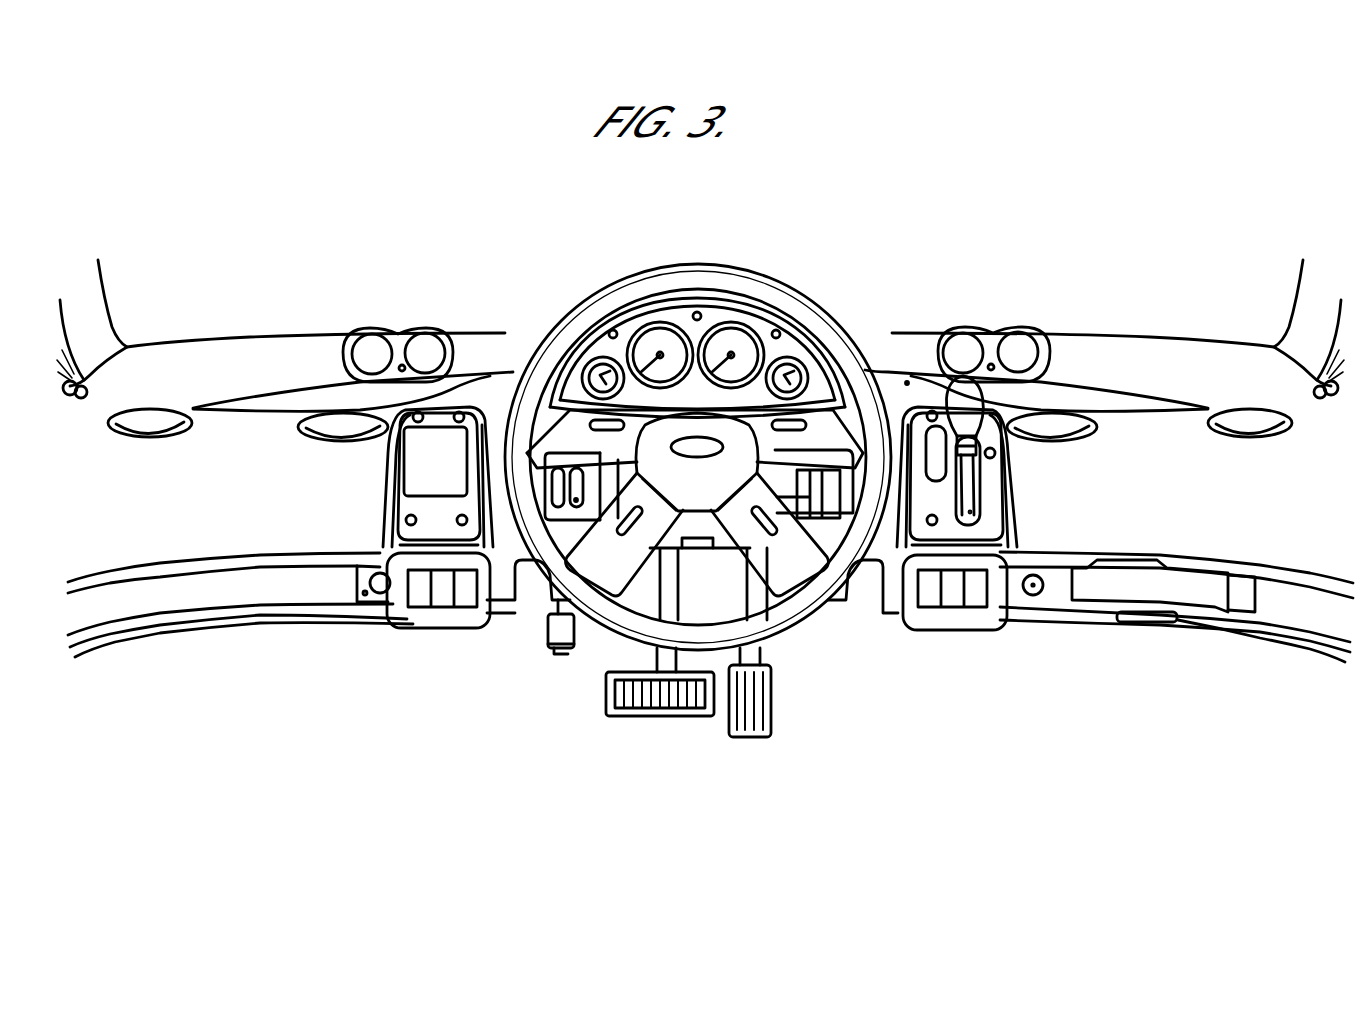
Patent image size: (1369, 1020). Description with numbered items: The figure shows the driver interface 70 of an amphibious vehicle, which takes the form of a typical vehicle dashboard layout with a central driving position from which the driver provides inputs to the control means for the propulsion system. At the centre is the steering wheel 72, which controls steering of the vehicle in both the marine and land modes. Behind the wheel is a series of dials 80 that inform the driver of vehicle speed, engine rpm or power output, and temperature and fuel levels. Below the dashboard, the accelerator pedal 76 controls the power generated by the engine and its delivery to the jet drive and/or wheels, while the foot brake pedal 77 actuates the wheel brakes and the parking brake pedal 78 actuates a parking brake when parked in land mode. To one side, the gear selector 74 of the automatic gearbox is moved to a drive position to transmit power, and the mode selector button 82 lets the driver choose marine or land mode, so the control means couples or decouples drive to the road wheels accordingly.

The driver interface 70 is at (292, 698).
The steering wheel 72 is at (753, 278).
The gear selector 74 is at (947, 373).
The accelerator pedal 76 is at (757, 712).
The foot brake pedal 77 is at (660, 708).
The parking brake pedal 78 is at (555, 652).
The dials 80 is at (680, 318).
The mode selector button 82 is at (468, 598).